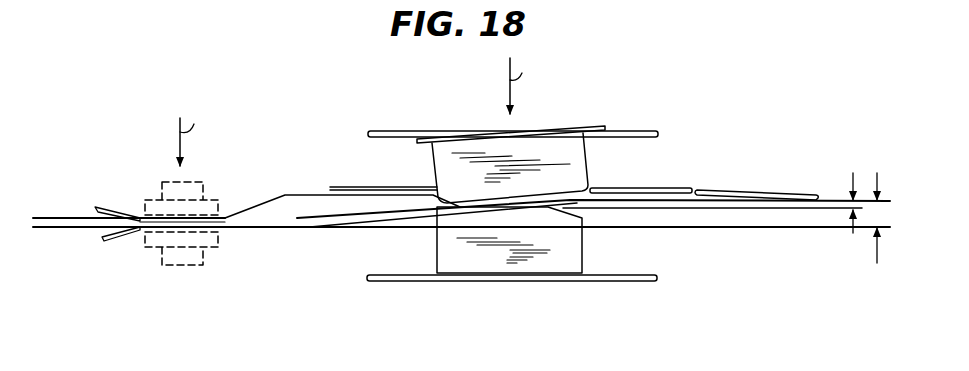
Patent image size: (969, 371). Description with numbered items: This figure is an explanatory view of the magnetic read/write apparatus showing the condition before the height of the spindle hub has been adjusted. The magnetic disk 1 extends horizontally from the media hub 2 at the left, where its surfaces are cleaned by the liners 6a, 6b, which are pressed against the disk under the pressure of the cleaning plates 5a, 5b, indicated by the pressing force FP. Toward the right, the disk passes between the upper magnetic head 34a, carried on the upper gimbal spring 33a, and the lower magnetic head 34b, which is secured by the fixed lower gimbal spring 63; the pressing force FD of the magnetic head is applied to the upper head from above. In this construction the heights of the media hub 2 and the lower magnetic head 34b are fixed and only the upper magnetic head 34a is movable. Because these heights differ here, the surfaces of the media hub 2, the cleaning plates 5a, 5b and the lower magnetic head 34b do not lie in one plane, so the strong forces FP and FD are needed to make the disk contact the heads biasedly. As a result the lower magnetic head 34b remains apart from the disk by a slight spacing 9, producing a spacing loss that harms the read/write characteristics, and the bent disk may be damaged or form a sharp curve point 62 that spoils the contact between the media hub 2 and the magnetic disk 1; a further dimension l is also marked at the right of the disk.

The magnetic disk 1 is at (738, 191).
The media hub 2 is at (662, 188).
The cleaning plate 5a is at (158, 190).
The cleaning plate 5b is at (215, 244).
The liner 6a is at (104, 204).
The liner 6b is at (118, 231).
The spacing 9 is at (852, 200).
The upper gimbal spring 33a is at (385, 131).
The upper magnetic head 34a is at (556, 158).
The lower magnetic head 34b is at (571, 256).
The sharp curve point 62 is at (285, 195).
The fixed lower gimbal spring 63 is at (600, 283).
The pressing force of the cleaning plates FP is at (179, 131).
The pressing force of the magnetic head FD is at (528, 82).
The length dimension l is at (876, 213).